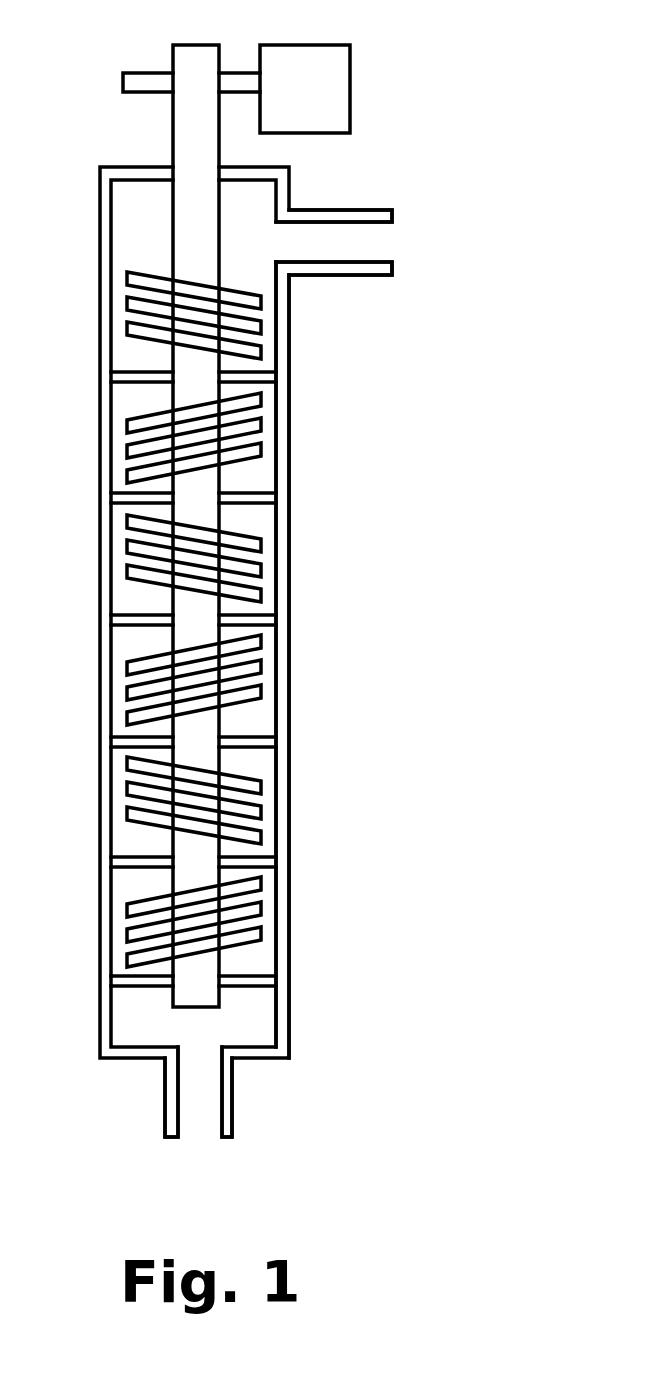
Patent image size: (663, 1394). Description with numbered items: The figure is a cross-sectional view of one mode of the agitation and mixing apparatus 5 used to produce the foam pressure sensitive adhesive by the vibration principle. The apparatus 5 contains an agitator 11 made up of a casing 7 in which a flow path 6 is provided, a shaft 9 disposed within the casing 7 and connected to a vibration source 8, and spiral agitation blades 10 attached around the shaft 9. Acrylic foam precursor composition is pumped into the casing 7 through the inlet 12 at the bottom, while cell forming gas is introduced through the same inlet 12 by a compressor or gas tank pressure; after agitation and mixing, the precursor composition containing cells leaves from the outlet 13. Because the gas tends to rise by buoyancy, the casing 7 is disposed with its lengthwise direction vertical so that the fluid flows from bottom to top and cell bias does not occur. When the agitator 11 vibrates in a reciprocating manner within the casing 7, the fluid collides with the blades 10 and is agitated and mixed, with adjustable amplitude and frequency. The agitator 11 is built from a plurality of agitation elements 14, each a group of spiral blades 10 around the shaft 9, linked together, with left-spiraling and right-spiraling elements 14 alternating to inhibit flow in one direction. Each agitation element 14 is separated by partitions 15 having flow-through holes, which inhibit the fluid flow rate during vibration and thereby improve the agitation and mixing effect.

The agitation and mixing apparatus 5 is at (432, 156).
The flow path 6 is at (130, 885).
The casing 7 is at (289, 572).
The vibration source 8 is at (307, 45).
The shaft 9 is at (222, 722).
The spiral agitation blades 10 is at (242, 777).
The agitator 11 is at (172, 122).
The inlet 12 is at (202, 1138).
The outlet 13 is at (393, 240).
The agitation elements 14 is at (297, 873).
The partitions 15 is at (253, 972).